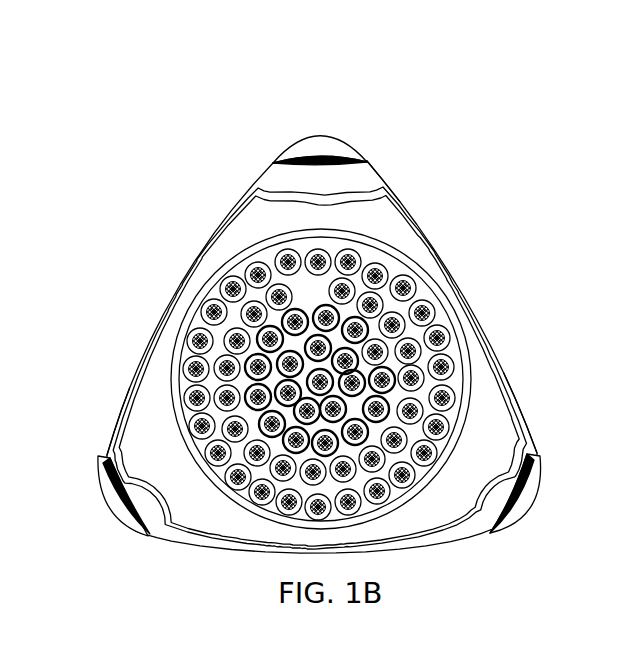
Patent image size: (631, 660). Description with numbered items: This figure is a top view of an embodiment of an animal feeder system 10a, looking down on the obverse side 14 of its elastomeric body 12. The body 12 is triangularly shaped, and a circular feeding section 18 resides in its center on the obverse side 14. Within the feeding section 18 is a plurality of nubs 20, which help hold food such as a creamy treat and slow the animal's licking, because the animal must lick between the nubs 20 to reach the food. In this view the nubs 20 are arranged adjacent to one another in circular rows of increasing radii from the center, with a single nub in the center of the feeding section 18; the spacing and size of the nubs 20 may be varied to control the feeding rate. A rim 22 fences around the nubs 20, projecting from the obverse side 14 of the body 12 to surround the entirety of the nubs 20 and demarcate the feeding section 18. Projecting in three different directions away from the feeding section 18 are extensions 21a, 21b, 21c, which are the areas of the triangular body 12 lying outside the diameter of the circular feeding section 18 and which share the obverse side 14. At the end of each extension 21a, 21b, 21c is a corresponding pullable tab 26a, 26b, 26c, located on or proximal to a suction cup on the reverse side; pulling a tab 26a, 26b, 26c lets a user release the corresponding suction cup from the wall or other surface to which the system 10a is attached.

The animal feeder system 10a is at (158, 84).
The elastomeric body 12 is at (410, 213).
The obverse side 14 is at (266, 190).
The feeding section 18 is at (173, 267).
The plurality of nubs 20 is at (433, 340).
The extension 21a is at (363, 180).
The extension 21b is at (513, 437).
The extension 21c is at (120, 430).
The rim 22 is at (157, 328).
The tab 26a is at (292, 142).
The tab 26b is at (100, 492).
The tab 26c is at (543, 492).